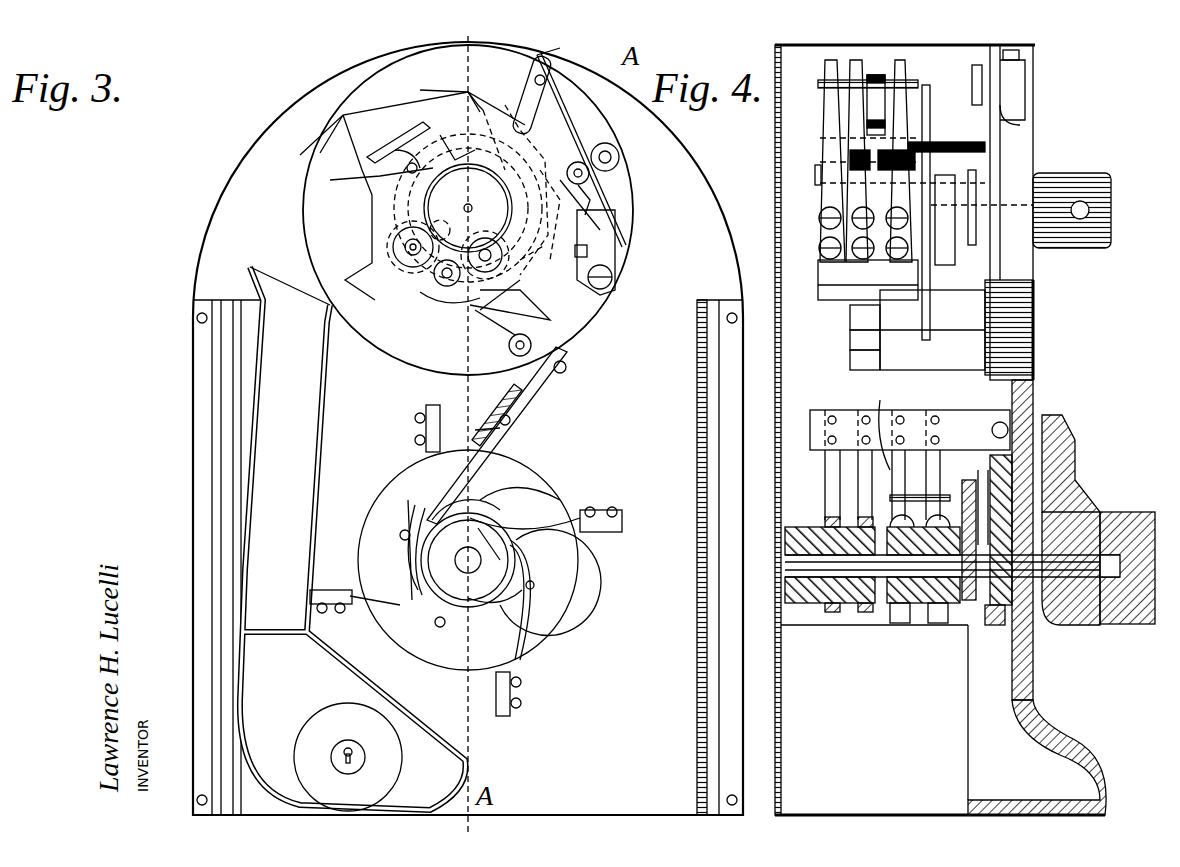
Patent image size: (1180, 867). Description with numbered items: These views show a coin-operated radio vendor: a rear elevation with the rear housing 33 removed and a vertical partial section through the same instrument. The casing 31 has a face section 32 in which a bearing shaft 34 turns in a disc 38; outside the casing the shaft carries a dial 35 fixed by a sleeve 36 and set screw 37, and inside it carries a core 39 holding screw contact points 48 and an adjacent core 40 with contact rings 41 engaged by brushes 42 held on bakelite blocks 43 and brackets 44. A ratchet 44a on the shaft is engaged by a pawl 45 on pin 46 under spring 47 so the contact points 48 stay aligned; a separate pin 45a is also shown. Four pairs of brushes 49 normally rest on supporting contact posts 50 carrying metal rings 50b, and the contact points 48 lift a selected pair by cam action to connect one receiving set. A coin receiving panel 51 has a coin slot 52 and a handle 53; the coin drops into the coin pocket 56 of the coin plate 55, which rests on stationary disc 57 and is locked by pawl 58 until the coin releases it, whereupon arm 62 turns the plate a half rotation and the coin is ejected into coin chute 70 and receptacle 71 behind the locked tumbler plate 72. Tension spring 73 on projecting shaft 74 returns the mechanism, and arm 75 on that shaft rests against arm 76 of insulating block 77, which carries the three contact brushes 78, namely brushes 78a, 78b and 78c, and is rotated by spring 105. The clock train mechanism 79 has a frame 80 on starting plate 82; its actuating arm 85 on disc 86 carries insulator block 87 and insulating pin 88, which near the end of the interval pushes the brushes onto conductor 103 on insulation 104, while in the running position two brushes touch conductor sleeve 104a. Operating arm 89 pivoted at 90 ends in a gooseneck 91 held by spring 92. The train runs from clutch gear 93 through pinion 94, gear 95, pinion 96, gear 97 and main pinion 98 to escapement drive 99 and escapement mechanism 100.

In FIG. 3, the casing 31 is at (195, 268).
In FIG. 4, the casing 31 is at (966, 742).
In FIG. 3, the face section 32 is at (240, 445).
In FIG. 4, the face section 32 is at (1030, 388).
In FIG. 4, the rear housing 33 is at (781, 360).
In FIG. 3, the bearing shaft 34 is at (511, 574).
In FIG. 4, the bearing shaft 34 is at (846, 612).
In FIG. 4, the dial 35 is at (1075, 450).
In FIG. 4, the sleeve 36 is at (1090, 630).
In FIG. 4, the set screw 37 is at (1130, 515).
In FIG. 3, the disc 38 is at (400, 468).
In FIG. 4, the disc 38 is at (985, 640).
In FIG. 4, the core 39 is at (915, 622).
In FIG. 3, the core 40 is at (490, 553).
In FIG. 4, the core 40 is at (795, 612).
In FIG. 3, the contact rings 41 is at (525, 600).
In FIG. 4, the contact rings 41 is at (825, 520).
In FIG. 3, the brushes 42 is at (412, 592).
In FIG. 4, the brushes 42 is at (835, 468).
In FIG. 3, the bakelite blocks 43 is at (440, 420).
In FIG. 4, the bakelite blocks 43 is at (930, 410).
In FIG. 3, the brackets 44 is at (500, 500).
In FIG. 4, the brackets 44 is at (1000, 455).
In FIG. 3, the ratchet 44a is at (485, 620).
In FIG. 4, the ratchet 44a is at (1000, 640).
In FIG. 3, the pawl 45 is at (510, 420).
In FIG. 4, the pawl 45 is at (982, 468).
In FIG. 3, the pin 45a is at (562, 410).
In FIG. 3, the pin 46 is at (566, 367).
In FIG. 3, the spring 47 is at (545, 398).
In FIG. 3, the contact points 48 is at (513, 423).
In FIG. 4, the contact points 48 is at (952, 566).
In FIG. 3, the brushes 49 is at (410, 502).
In FIG. 4, the brushes 49 is at (870, 615).
In FIG. 3, the supporting contact posts 50 is at (400, 533).
In FIG. 4, the supporting contact posts 50 is at (929, 484).
In FIG. 4, the metal rings 50b is at (885, 422).
In FIG. 4, the coin receiving panel 51 is at (1018, 140).
In FIG. 4, the coin slot 52 is at (1018, 90).
In FIG. 4, the handle 53 is at (1090, 203).
In FIG. 4, the coin plate 55 is at (1020, 118).
In FIG. 4, the coin pocket 56 is at (1020, 56).
In FIG. 4, the stationary disc 57 is at (1030, 318).
In FIG. 4, the pawl 58 is at (965, 95).
In FIG. 4, the arm 62 is at (960, 190).
In FIG. 3, the coin chute 70 is at (306, 548).
In FIG. 4, the coin chute 70 is at (1030, 355).
In FIG. 3, the receptacle 71 is at (365, 757).
In FIG. 4, the receptacle 71 is at (820, 622).
In FIG. 3, the tumbler plate 72 is at (362, 755).
In FIG. 4, the tension spring 73 is at (955, 235).
In FIG. 4, the projecting shaft 74 is at (944, 220).
In FIG. 4, the arm 75 is at (900, 258).
In FIG. 3, the arm 76 is at (575, 250).
In FIG. 3, the insulating block 77 is at (598, 268).
In FIG. 4, the insulating block 77 is at (825, 270).
In FIG. 3, the contact brushes 78 is at (565, 115).
In FIG. 4, the contact brushes 78 is at (845, 118).
In FIG. 4, the spring brush 78a is at (888, 100).
In FIG. 4, the spring brush 78b is at (855, 140).
In FIG. 4, the spring brush 78c is at (845, 162).
In FIG. 3, the clock train mechanism 79 is at (468, 208).
In FIG. 3, the frame 80 is at (380, 208).
In FIG. 3, the starting plate 82 is at (335, 150).
In FIG. 4, the starting plate 82 is at (915, 318).
In FIG. 3, the actuating arm 85 is at (527, 190).
In FIG. 4, the actuating arm 85 is at (890, 125).
In FIG. 3, the disc 86 is at (455, 160).
In FIG. 3, the insulator block 87 is at (518, 95).
In FIG. 4, the insulator block 87 is at (880, 72).
In FIG. 3, the insulating pin 88 is at (560, 50).
In FIG. 4, the insulating pin 88 is at (820, 84).
In FIG. 3, the operating arm 89 is at (462, 88).
In FIG. 4, the operating arm 89 is at (852, 312).
In FIG. 3, the pivot 90 is at (510, 325).
In FIG. 4, the pivot 90 is at (870, 375).
In FIG. 3, the gooseneck 91 is at (390, 150).
In FIG. 3, the spring 92 is at (535, 335).
In FIG. 3, the clutch gear 93 is at (528, 205).
In FIG. 3, the pinion 94 is at (525, 235).
In FIG. 3, the gear 95 is at (468, 300).
In FIG. 3, the pinion 96 is at (420, 300).
In FIG. 3, the gear 97 is at (430, 280).
In FIG. 3, the main pinion 98 is at (392, 250).
In FIG. 3, the escapement drive 99 is at (420, 225).
In FIG. 3, the escapement mechanism 100 is at (330, 180).
In FIG. 3, the conductor 103 is at (620, 157).
In FIG. 4, the conductor 103 is at (850, 165).
In FIG. 3, the insulation 104 is at (590, 175).
In FIG. 4, the insulation 104 is at (930, 150).
In FIG. 3, the conductor sleeve 104a is at (592, 200).
In FIG. 3, the spring 105 is at (497, 328).
In FIG. 4, the spring 105 is at (850, 332).